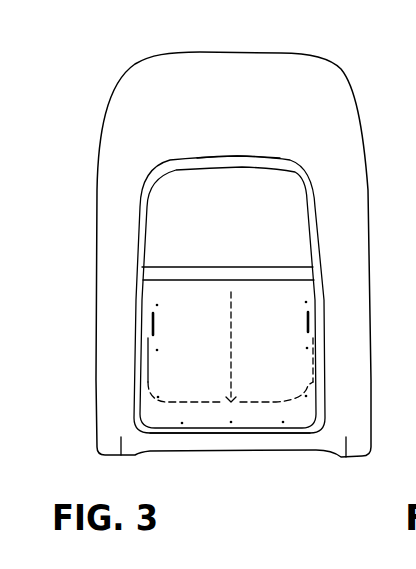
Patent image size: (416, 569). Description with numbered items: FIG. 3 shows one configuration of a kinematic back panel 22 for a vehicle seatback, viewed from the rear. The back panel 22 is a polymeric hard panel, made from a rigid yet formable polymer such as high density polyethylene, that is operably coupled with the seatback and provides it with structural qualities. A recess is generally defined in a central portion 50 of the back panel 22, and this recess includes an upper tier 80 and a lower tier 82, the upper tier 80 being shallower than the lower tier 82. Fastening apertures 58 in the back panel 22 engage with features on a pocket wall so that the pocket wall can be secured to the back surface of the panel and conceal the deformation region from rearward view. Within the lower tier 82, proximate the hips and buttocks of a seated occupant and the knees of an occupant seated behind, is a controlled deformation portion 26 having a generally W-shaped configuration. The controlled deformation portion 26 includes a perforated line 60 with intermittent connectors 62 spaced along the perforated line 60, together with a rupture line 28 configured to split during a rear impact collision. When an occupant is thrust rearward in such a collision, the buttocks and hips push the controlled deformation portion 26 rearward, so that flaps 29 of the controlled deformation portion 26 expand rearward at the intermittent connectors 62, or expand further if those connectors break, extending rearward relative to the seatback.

The back panel 22 is at (190, 87).
The central portion 50 is at (178, 187).
The upper tier 80 is at (175, 243).
The lower tier 82 is at (273, 293).
The fastening apertures 58 is at (152, 322).
The intermittent connector 62 is at (147, 362).
The perforated line 60 is at (150, 393).
The flaps 29 is at (181, 351).
The rupture line 28 is at (260, 403).
The controlled deformation portion 26 is at (243, 432).